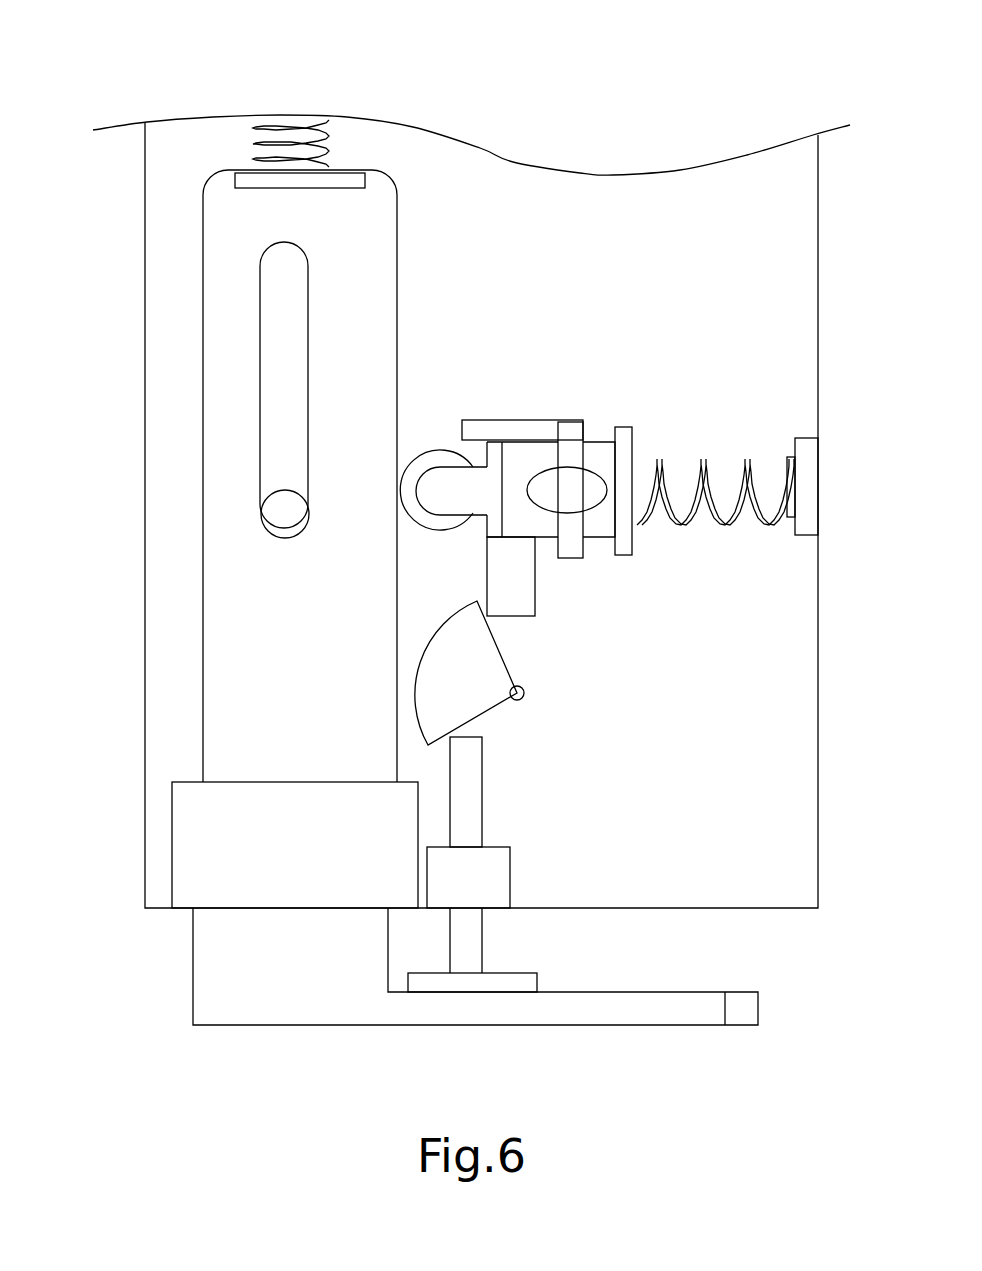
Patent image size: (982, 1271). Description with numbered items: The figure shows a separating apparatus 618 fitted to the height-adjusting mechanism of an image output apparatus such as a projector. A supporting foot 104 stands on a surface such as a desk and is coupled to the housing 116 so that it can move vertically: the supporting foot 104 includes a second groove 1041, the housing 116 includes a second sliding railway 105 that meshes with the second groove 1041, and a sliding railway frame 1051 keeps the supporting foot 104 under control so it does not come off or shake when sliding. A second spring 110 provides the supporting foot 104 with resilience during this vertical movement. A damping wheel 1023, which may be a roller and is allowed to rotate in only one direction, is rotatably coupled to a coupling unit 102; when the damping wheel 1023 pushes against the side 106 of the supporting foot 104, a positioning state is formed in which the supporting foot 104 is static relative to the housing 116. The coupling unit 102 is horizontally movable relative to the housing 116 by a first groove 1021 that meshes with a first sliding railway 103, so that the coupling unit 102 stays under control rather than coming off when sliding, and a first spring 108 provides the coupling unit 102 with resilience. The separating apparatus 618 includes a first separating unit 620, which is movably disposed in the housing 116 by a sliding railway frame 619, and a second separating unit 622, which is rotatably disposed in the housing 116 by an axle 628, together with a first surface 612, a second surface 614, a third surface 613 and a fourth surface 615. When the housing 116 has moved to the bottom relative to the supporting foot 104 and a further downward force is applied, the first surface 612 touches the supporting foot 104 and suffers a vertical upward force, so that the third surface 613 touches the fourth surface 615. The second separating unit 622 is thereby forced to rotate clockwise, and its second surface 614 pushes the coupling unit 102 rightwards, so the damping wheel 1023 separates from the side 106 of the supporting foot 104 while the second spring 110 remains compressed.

The coupling unit 102 is at (543, 473).
The first sliding railway 103 is at (547, 470).
The supporting foot 104 is at (230, 978).
The second sliding railway 105 is at (283, 510).
The side of the supporting foot 106 is at (397, 270).
The first spring 108 is at (657, 463).
The second spring 110 is at (270, 120).
The housing 116 is at (819, 662).
The first surface 612 is at (485, 990).
The third surface 613 is at (463, 737).
The second surface 614 is at (508, 658).
The fourth surface 615 is at (497, 715).
The separating apparatus 618 is at (567, 777).
The sliding railway frame of the separating apparatus 619 is at (480, 885).
The first separating unit 620 is at (473, 810).
The second separating unit 622 is at (520, 674).
The axle 628 is at (523, 693).
The first groove 1021 is at (590, 492).
The damping wheel 1023 is at (433, 462).
The second groove 1041 is at (278, 343).
The sliding railway frame 1051 is at (198, 848).